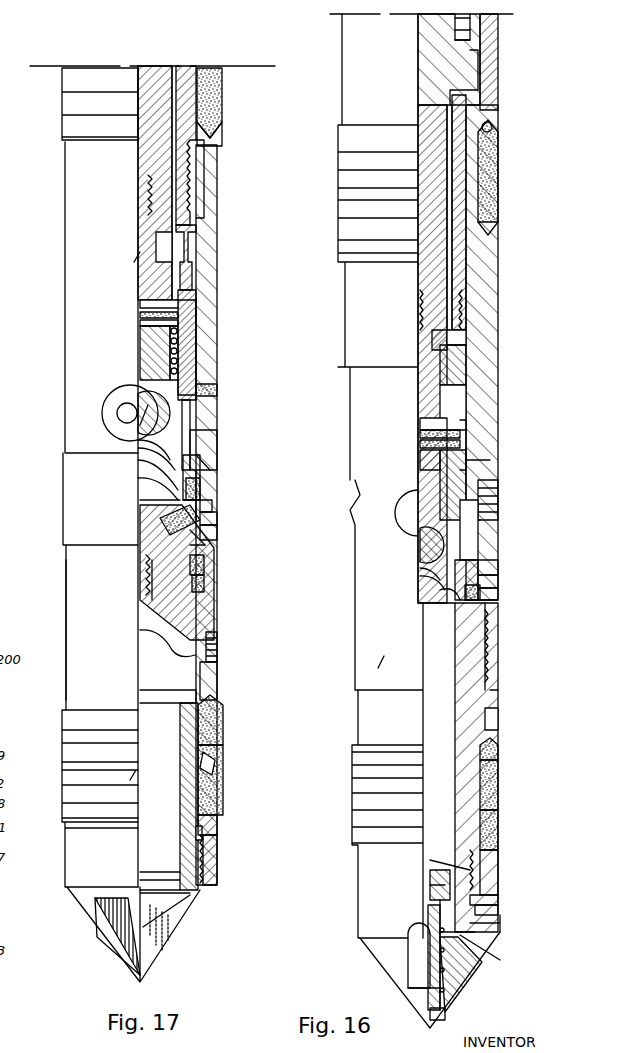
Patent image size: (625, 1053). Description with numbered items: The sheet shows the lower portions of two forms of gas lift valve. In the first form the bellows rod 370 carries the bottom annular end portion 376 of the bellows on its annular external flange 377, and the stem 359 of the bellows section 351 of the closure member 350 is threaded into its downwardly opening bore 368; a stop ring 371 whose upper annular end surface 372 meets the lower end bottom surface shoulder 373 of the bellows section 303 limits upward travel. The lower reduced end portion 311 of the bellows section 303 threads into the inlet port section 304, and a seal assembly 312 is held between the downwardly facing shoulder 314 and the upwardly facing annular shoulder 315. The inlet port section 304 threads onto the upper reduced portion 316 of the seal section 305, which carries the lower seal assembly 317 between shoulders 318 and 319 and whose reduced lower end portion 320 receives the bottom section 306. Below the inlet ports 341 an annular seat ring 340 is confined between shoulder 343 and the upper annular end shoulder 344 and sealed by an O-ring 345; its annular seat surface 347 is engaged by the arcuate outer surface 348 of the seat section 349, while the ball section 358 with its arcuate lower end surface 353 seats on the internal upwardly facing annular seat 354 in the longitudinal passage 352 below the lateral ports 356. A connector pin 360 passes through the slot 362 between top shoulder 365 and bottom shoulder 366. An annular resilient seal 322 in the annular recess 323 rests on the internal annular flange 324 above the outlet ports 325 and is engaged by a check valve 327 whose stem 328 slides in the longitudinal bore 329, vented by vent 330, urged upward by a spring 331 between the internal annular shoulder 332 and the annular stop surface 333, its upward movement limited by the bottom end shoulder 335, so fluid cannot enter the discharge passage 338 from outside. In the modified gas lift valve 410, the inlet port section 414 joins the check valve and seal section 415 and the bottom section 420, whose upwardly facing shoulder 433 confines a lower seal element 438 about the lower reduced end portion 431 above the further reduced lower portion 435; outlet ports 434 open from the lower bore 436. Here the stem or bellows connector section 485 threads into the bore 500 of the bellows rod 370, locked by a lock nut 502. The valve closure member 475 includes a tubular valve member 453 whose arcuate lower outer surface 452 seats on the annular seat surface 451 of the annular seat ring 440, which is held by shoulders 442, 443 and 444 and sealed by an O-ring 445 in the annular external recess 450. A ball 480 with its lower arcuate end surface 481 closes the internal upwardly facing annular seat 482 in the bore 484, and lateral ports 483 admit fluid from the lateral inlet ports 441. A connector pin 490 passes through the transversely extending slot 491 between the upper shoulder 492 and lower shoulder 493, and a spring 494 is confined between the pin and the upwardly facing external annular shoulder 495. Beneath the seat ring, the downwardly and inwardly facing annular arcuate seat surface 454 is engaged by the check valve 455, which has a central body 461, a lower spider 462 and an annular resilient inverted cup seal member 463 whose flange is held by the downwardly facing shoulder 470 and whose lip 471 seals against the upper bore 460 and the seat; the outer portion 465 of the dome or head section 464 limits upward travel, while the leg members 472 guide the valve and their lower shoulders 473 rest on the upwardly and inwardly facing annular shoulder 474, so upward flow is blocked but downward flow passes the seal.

In FIG. 17, the gas lift valve 410 is at (46, 209).
In FIG. 17, the check valve and seal section 415 is at (65, 593).
In FIG. 17, the bellows rod 370 is at (145, 126).
In FIG. 16, the bellows rod 370 is at (430, 100).
In FIG. 17, the downwardly opening bore 500 is at (146, 179).
In FIG. 17, the lock nut 502 is at (160, 253).
In FIG. 17, the seal assembly 312 is at (215, 90).
In FIG. 16, the seal assembly 312 is at (492, 185).
In FIG. 17, the upwardly facing annular shoulder 315 is at (218, 136).
In FIG. 16, the upwardly facing annular shoulder 315 is at (492, 248).
In FIG. 17, the lower reduced end portion 311 is at (195, 173).
In FIG. 16, the lower reduced end portion 311 is at (458, 300).
In FIG. 17, the inlet port section 414 is at (208, 245).
In FIG. 17, the valve closure member 475 is at (191, 276).
In FIG. 17, the connector pin 490 is at (188, 310).
In FIG. 17, the upper shoulder 492 is at (160, 304).
In FIG. 17, the transversely extending slot 491 is at (142, 314).
In FIG. 17, the lower shoulder 493 is at (142, 323).
In FIG. 17, the stem or bellows connector section 485 is at (150, 347).
In FIG. 17, the spring 494 is at (180, 337).
In FIG. 17, the bore 484 is at (205, 350).
In FIG. 17, the upwardly facing external annular shoulder 495 is at (190, 377).
In FIG. 17, the lateral ports 483 is at (205, 397).
In FIG. 17, the internal upwardly facing annular seat 482 is at (130, 398).
In FIG. 17, the lateral inlet ports 441 is at (118, 416).
In FIG. 17, the ball 480 is at (180, 418).
In FIG. 17, the longitudinal passage 481 is at (138, 445).
In FIG. 17, the tubular valve member 453 is at (136, 449).
In FIG. 17, the annular seat surface 451 is at (138, 460).
In FIG. 17, the arcuate lower outer surface 452 is at (142, 478).
In FIG. 17, the internal annular downwardly facing shoulder 442 is at (200, 470).
In FIG. 17, the O-ring 445 is at (202, 488).
In FIG. 17, the annular external recess 450 is at (212, 503).
In FIG. 17, the outer portion of dome section 465 is at (212, 516).
In FIG. 17, the annular seat ring 440 is at (205, 505).
In FIG. 17, the upwardly facing external annular shoulder 443 is at (205, 530).
In FIG. 17, the dome or head section 464 is at (205, 538).
In FIG. 17, the upwardly facing internal annular shoulder 444 is at (205, 548).
In FIG. 17, the downwardly and inwardly facing annular arcuate seat surface 454 is at (150, 509).
In FIG. 17, the downwardly facing shoulder 470 is at (170, 530).
In FIG. 17, the check valve 455 is at (201, 605).
In FIG. 17, the central body 461 is at (144, 561).
In FIG. 17, the lower spider 462 is at (160, 579).
In FIG. 17, the annular resilient inverted cup seal member 463 is at (204, 563).
In FIG. 17, the lip 471 is at (204, 582).
In FIG. 17, the leg members 472 is at (142, 635).
In FIG. 17, the lower shoulders 473 is at (210, 660).
In FIG. 17, the upper bore 460 is at (208, 688).
In FIG. 17, the upwardly and inwardly facing annular shoulder 474 is at (192, 690).
In FIG. 17, the lower reduced end portion 431 is at (192, 783).
In FIG. 17, the packing 438 is at (215, 728).
In FIG. 17, the lower bore 436 is at (216, 748).
In FIG. 17, the upwardly facing shoulder 433 is at (217, 825).
In FIG. 17, the further reduced lower portion 435 is at (203, 845).
In FIG. 17, the bottom section 420 is at (210, 865).
In FIG. 17, the outlet ports 434 is at (160, 950).
In FIG. 16, the discharge port or passage 338 is at (425, 714).
In FIG. 16, the inlet ports 341 is at (410, 495).
In FIG. 16, the bottom annular end portion 376 is at (470, 50).
In FIG. 16, the annular external flange 377 is at (470, 70).
In FIG. 16, the bellows section 303 is at (490, 95).
In FIG. 16, the downwardly facing shoulder 314 is at (492, 128).
In FIG. 16, the inlet port section 304 is at (492, 306).
In FIG. 16, the downwardly opening bore 368 is at (420, 300).
In FIG. 16, the lower end bottom surface shoulder 373 is at (432, 345).
In FIG. 16, the upper annular end surface 372 is at (465, 340).
In FIG. 16, the stop ring 371 is at (466, 365).
In FIG. 16, the closure member 350 is at (462, 395).
In FIG. 16, the top shoulder 365 is at (420, 424).
In FIG. 16, the slot 362 is at (420, 434).
In FIG. 16, the bottom shoulder 366 is at (420, 444).
In FIG. 16, the stem 359 is at (420, 462).
In FIG. 16, the connector pin 360 is at (466, 440).
In FIG. 16, the bellows section 351 is at (466, 460).
In FIG. 16, the seat section 349 is at (490, 465).
In FIG. 16, the longitudinal passage 352 is at (492, 490).
In FIG. 16, the lateral ports 356 is at (470, 520).
In FIG. 16, the ball section 358 is at (420, 548).
In FIG. 16, the internal upwardly facing annular seat 354 is at (420, 564).
In FIG. 16, the arcuate lower end surface 353 is at (420, 581).
In FIG. 16, the annular seat surface 347 is at (440, 595).
In FIG. 16, the arcuate outer surface 348 is at (470, 566).
In FIG. 16, the annular downwardly facing shoulder 343 is at (490, 566).
In FIG. 16, the annular seat ring 340 is at (490, 580).
In FIG. 16, the O-ring 345 is at (490, 592).
In FIG. 16, the upper annular end shoulder 344 is at (480, 592).
In FIG. 16, the upper reduced portion 316 is at (475, 657).
In FIG. 16, the seal section 305 is at (500, 739).
In FIG. 16, the annular downwardly facing shoulder 319 is at (500, 758).
In FIG. 16, the lower seal assembly 317 is at (500, 804).
In FIG. 16, the upwardly facing shoulder 318 is at (500, 834).
In FIG. 16, the reduced lower end portion 320 is at (478, 869).
In FIG. 16, the annular resilient seal 322 is at (498, 883).
In FIG. 16, the bottom end shoulder 335 is at (495, 900).
In FIG. 16, the bottom section 306 is at (500, 912).
In FIG. 16, the internal annular flange 324 is at (500, 925).
In FIG. 16, the annular recess 323 is at (430, 862).
In FIG. 16, the check valve 327 is at (430, 878).
In FIG. 16, the annular stop surface 333 is at (430, 885).
In FIG. 16, the stem 328 is at (430, 906).
In FIG. 16, the spring 331 is at (430, 920).
In FIG. 16, the outlet ports 325 is at (410, 960).
In FIG. 16, the internal annular shoulder 332 is at (478, 960).
In FIG. 16, the longitudinal bore 329 is at (415, 1000).
In FIG. 16, the vent 330 is at (445, 1018).